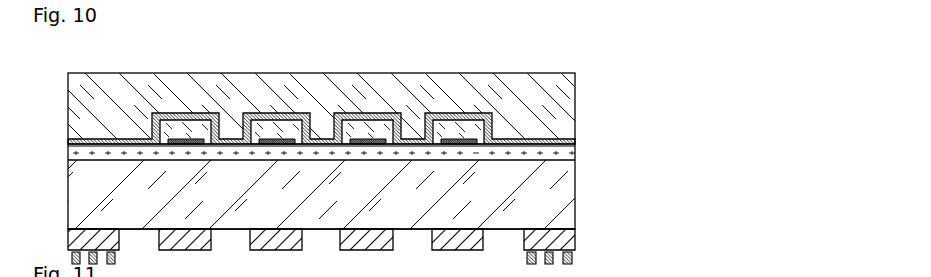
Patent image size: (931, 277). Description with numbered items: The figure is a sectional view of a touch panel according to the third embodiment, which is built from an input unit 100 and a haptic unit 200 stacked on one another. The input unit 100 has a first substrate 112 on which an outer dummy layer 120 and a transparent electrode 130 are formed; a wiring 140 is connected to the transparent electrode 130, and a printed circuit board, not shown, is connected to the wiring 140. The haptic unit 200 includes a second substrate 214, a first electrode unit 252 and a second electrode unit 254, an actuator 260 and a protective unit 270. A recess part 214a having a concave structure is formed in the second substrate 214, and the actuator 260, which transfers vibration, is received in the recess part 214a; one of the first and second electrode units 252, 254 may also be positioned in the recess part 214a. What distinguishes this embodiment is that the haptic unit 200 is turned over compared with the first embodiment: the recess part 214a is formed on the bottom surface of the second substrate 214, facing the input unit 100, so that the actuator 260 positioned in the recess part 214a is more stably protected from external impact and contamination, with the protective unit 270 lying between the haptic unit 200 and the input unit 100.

The haptic unit 200 is at (63, 72).
The input unit 100 is at (65, 157).
The second substrate 214 is at (575, 85).
The recess part 214a is at (507, 121).
The actuator 260 is at (493, 130).
The second electrode unit 254 is at (452, 140).
The first electrode unit 252 is at (575, 139).
The protective unit 270 is at (575, 157).
The first substrate 112 is at (568, 188).
The transparent electrode 130 is at (483, 231).
The outer dummy layer 120 is at (572, 235).
The wiring 140 is at (572, 253).